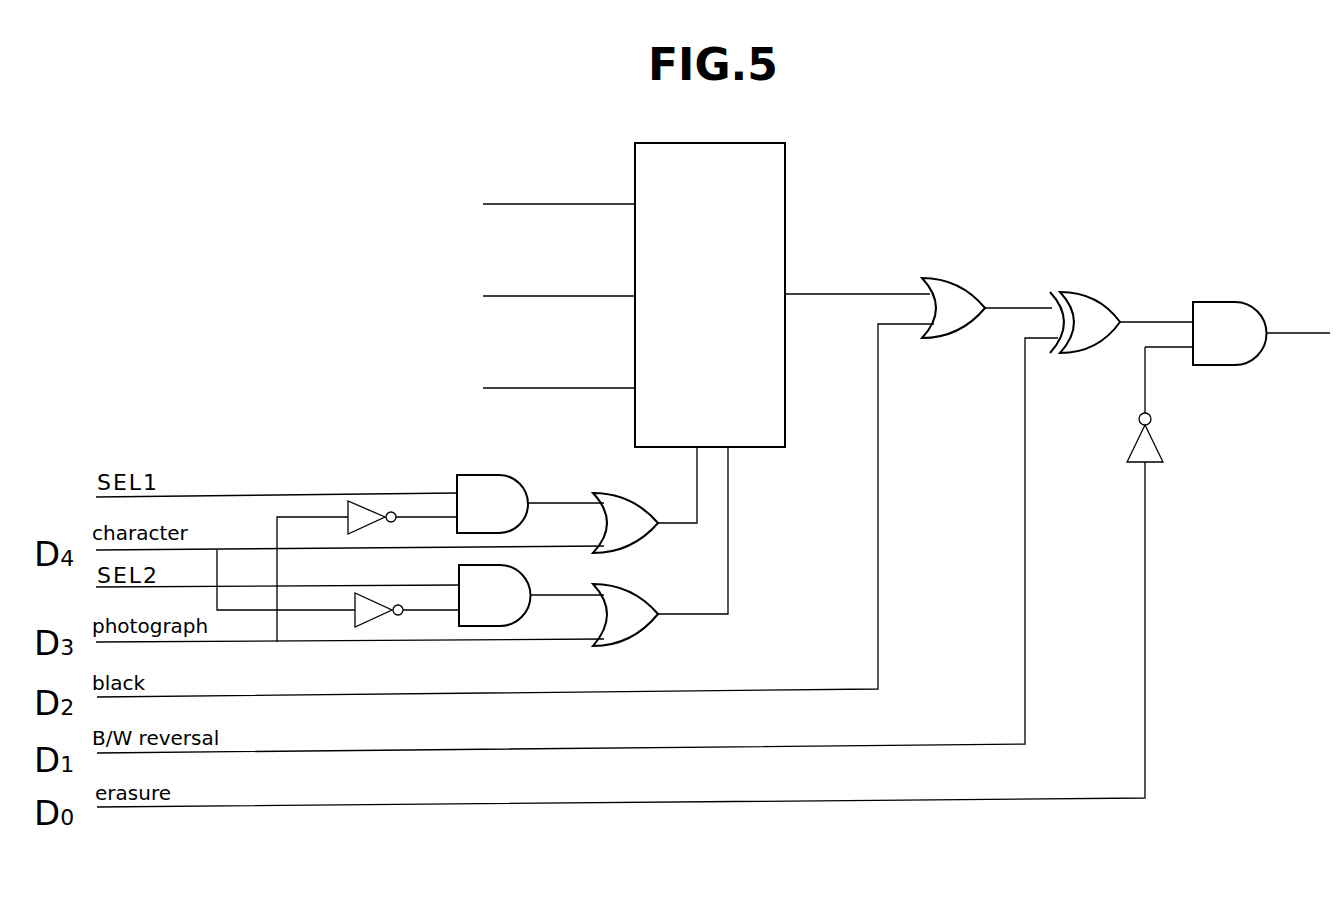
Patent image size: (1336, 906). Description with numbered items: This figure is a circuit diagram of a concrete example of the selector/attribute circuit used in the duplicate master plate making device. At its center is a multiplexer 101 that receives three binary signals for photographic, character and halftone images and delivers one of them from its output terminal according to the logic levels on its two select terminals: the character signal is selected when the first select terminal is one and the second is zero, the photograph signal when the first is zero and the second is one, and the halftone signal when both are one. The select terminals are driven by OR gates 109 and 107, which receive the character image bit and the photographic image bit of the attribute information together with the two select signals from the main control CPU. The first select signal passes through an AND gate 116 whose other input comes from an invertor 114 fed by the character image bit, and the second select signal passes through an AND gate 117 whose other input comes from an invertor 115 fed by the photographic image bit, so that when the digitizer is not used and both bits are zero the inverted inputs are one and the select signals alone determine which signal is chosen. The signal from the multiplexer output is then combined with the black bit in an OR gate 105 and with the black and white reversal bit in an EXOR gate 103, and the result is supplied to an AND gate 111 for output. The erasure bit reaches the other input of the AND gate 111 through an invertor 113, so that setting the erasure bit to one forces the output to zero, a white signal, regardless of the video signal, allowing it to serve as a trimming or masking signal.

The multiplexer 101 is at (787, 183).
The EXOR gate 103 is at (1082, 291).
The OR gate 105 is at (931, 277).
The OR gate 107 is at (645, 600).
The OR gate 109 is at (605, 496).
The AND gate 111 is at (1218, 301).
The invertor 113 is at (1130, 447).
The invertor 114 is at (368, 504).
The invertor 115 is at (368, 628).
The AND gate 116 is at (512, 475).
The AND gate 117 is at (528, 584).